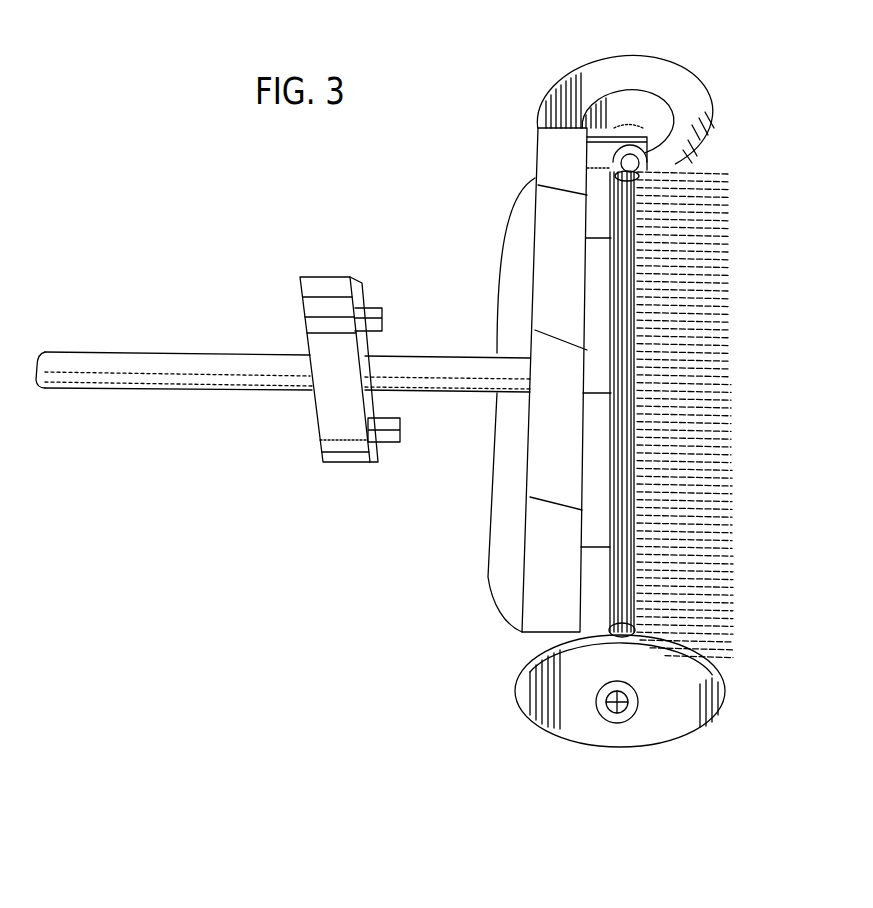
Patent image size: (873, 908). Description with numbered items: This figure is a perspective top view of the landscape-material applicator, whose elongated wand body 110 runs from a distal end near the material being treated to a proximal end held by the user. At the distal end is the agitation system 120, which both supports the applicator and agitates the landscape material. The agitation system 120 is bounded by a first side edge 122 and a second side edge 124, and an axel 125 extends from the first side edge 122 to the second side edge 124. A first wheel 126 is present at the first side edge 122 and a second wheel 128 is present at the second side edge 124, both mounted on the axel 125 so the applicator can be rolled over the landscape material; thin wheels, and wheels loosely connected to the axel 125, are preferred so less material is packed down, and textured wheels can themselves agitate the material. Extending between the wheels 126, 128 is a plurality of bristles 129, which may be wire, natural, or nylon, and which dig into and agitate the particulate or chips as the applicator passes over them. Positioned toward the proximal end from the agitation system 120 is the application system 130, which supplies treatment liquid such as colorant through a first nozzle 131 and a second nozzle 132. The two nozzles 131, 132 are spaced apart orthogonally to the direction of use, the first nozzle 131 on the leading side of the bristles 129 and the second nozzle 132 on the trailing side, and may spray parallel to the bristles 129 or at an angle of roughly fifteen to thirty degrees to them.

The wand body 110 is at (110, 357).
The agitation system 120 is at (488, 577).
The first side edge 122 is at (548, 728).
The second side edge 124 is at (672, 67).
The axel 125 is at (625, 427).
The first wheel 126 is at (703, 727).
The second wheel 128 is at (698, 110).
The bristles 129 is at (693, 490).
The application system 130 is at (330, 462).
The first nozzle 131 is at (370, 308).
The second nozzle 132 is at (388, 432).